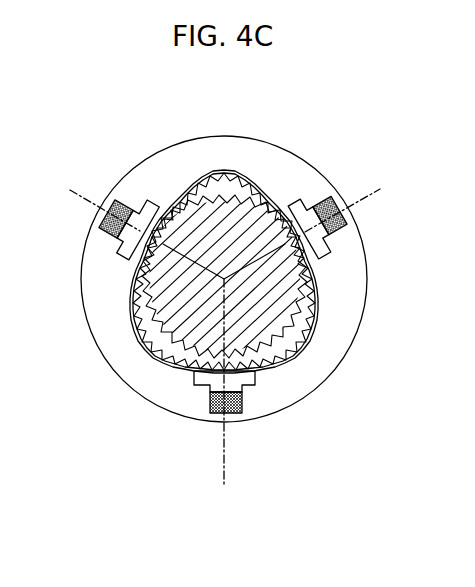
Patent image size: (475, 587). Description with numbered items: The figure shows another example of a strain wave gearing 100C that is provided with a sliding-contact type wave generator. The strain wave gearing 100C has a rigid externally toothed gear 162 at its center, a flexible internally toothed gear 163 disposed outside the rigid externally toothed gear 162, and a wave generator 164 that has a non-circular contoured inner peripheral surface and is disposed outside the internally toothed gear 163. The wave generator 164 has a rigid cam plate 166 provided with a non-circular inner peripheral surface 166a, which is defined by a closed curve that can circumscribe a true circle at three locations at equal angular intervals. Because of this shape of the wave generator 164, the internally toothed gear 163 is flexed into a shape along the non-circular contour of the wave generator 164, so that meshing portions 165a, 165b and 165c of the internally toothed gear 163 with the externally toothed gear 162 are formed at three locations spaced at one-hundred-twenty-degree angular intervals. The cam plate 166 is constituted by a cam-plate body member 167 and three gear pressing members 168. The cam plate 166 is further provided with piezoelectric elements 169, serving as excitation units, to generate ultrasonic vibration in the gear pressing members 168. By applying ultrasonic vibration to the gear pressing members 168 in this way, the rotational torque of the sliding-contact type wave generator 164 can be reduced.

The strain wave gearing 100C is at (305, 146).
The rigid externally toothed gear 162 is at (298, 352).
The flexible internally toothed gear 163 is at (321, 296).
The wave generator 164 is at (343, 275).
The meshing portion 165a is at (318, 247).
The meshing portion 165b is at (143, 212).
The meshing portion 165c is at (250, 393).
The rigid cam plate 166 is at (165, 411).
The non-circular inner peripheral surface 166a is at (131, 331).
The cam-plate body member 167 is at (157, 380).
The gear pressing member 168 is at (297, 201).
The piezoelectric element 169 is at (325, 199).